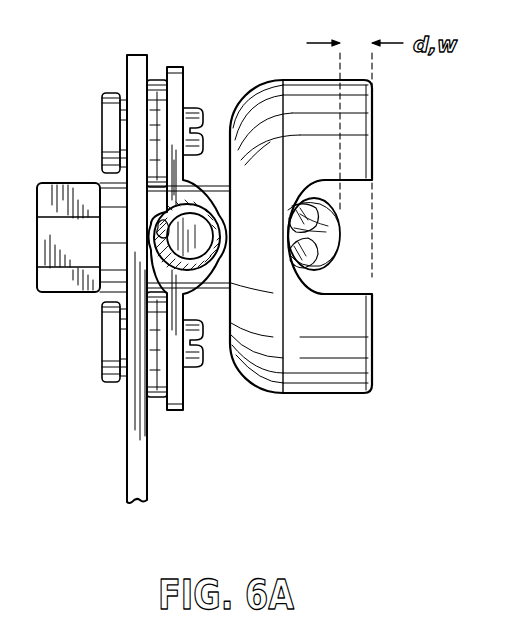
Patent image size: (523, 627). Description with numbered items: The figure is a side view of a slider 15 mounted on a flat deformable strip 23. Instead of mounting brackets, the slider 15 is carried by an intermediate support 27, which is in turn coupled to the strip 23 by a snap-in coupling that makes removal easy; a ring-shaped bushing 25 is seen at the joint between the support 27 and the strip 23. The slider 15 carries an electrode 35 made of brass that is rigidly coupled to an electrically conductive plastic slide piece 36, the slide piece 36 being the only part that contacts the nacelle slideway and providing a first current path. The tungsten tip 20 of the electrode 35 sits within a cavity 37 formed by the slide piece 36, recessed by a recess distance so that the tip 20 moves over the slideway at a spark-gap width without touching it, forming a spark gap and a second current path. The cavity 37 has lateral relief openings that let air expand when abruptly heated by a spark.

The slider 15 is at (327, 496).
The tip 20 is at (330, 222).
The strip 23 is at (132, 472).
The bushing ring 25 is at (193, 247).
The intermediate support 27 is at (177, 102).
The electrode 35 is at (108, 281).
The slide piece 36 is at (313, 363).
The cavity 37 is at (353, 293).